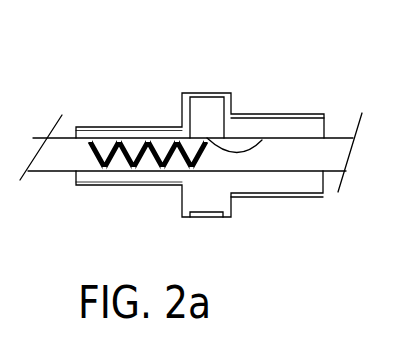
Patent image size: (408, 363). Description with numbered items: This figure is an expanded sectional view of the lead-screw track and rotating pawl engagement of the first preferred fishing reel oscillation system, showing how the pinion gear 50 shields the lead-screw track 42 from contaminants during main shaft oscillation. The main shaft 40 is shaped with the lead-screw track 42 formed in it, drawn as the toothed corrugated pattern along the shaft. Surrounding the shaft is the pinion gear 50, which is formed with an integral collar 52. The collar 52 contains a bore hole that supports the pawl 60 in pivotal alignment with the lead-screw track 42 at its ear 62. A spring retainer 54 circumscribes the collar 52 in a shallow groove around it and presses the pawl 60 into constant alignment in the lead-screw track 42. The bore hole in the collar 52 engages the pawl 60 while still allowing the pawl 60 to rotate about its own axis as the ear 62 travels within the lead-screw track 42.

The main shaft 40 is at (311, 153).
The lead-screw track 42 is at (107, 168).
The pinion gear 50 is at (289, 184).
The collar 52 is at (211, 196).
The spring retainer 54 is at (207, 97).
The pawl 60 is at (198, 115).
The ear 62 is at (262, 140).